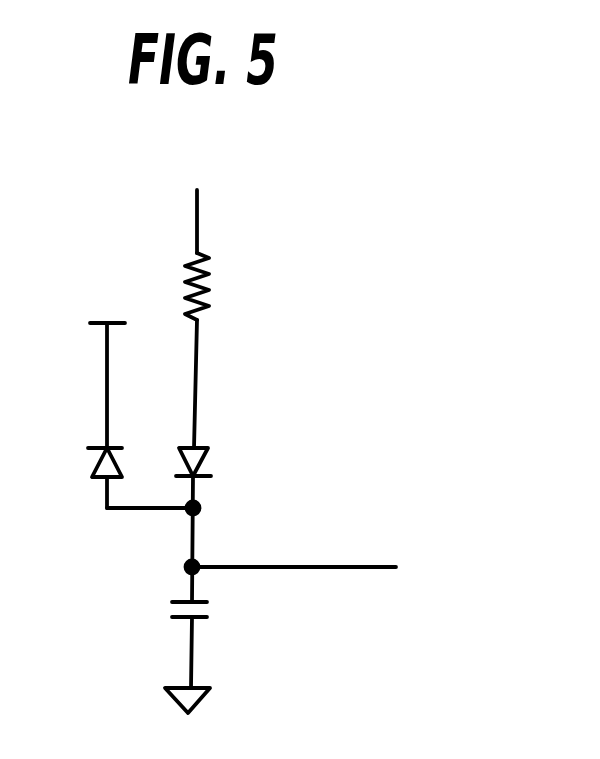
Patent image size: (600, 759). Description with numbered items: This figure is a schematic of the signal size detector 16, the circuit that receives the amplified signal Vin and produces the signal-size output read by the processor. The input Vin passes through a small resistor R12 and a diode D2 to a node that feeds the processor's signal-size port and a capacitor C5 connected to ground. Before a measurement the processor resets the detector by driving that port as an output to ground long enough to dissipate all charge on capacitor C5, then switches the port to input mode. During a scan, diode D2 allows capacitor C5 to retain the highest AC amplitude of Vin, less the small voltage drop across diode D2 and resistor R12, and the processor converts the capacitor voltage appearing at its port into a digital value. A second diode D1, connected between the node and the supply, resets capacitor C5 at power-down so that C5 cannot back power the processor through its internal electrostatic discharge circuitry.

The signal size detector 16 is at (392, 396).
The resistor R12 is at (232, 286).
The diode D1 is at (82, 461).
The diode D2 is at (217, 461).
The capacitor C5 is at (212, 611).